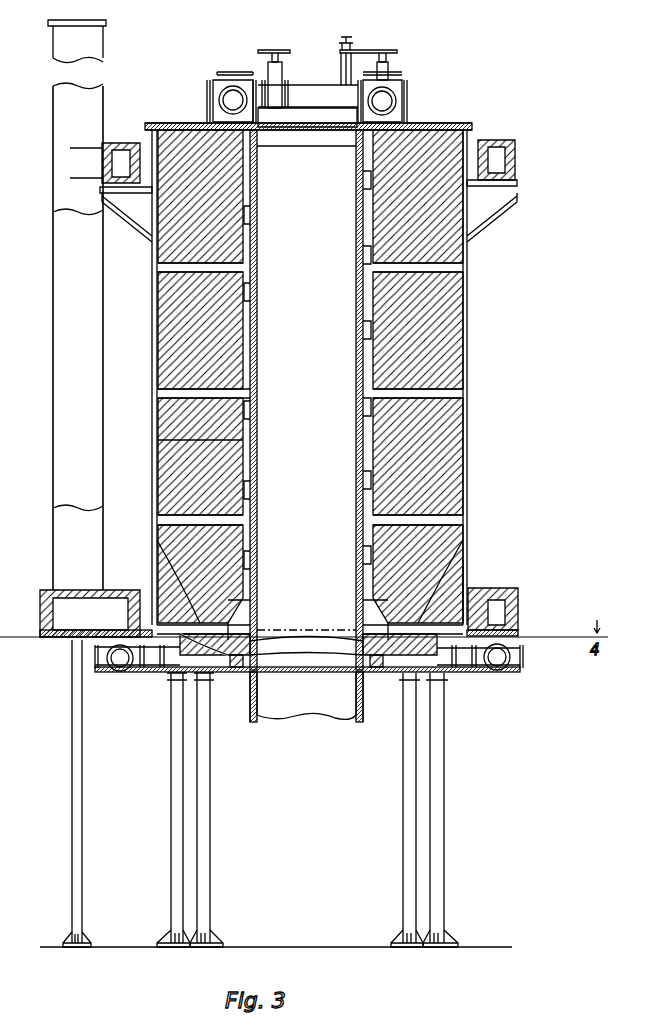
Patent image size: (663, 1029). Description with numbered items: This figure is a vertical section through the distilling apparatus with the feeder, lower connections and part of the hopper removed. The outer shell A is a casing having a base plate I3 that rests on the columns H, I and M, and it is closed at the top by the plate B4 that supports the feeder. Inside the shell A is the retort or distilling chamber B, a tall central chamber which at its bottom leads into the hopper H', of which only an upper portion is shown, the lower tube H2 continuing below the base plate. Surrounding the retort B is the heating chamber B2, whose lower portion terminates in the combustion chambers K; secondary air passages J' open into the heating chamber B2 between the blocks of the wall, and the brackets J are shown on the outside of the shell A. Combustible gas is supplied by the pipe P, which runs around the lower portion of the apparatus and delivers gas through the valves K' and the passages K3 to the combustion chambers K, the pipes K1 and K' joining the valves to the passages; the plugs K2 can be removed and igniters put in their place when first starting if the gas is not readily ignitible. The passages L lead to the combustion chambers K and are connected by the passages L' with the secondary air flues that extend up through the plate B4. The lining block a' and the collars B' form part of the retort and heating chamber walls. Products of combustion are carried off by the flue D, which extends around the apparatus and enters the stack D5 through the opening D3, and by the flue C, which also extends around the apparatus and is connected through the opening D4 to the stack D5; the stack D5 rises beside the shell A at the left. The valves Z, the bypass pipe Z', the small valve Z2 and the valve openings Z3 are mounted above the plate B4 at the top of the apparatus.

The shell A is at (467, 352).
The retort B is at (306, 400).
The tube collars B' is at (307, 370).
The heating chamber B2 is at (258, 395).
The plate B4 is at (415, 125).
The filling block a' is at (177, 453).
The flue C is at (308, 161).
The flue D is at (505, 612).
The opening D3 is at (90, 613).
The opening D4 is at (86, 163).
The stack D5 is at (77, 305).
The column H is at (312, 810).
The hopper H' is at (311, 714).
The lower tube H2 is at (306, 697).
The column I is at (290, 810).
The base plate I3 is at (512, 632).
The bracket J is at (308, 211).
The secondary air passage J' is at (305, 393).
The combustion chamber K is at (310, 619).
The valve K' is at (478, 674).
The left pipe K1 is at (150, 672).
The plug K2 is at (385, 688).
The passage K3 is at (306, 641).
The passage L is at (304, 581).
The passage L' is at (483, 569).
The column M is at (84, 790).
The pipe P is at (108, 660).
The valve Z is at (317, 88).
The bypass pipe Z' is at (325, 55).
The small valve Z2 is at (347, 32).
The valve opening Z3 is at (432, 70).